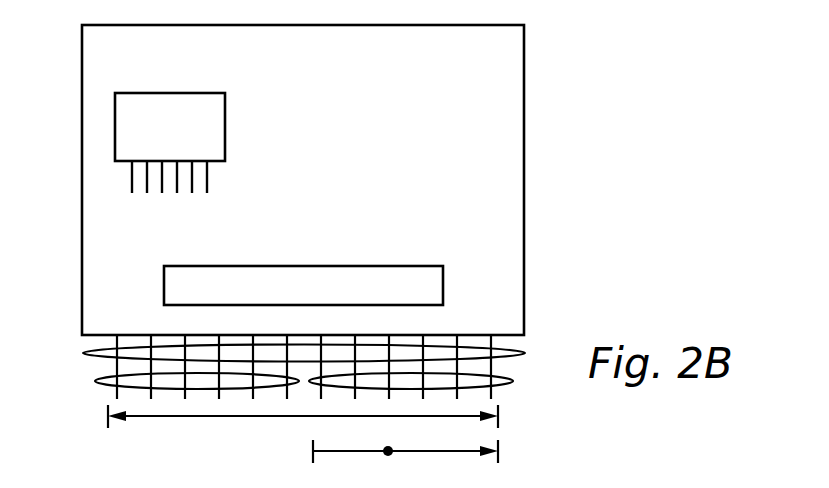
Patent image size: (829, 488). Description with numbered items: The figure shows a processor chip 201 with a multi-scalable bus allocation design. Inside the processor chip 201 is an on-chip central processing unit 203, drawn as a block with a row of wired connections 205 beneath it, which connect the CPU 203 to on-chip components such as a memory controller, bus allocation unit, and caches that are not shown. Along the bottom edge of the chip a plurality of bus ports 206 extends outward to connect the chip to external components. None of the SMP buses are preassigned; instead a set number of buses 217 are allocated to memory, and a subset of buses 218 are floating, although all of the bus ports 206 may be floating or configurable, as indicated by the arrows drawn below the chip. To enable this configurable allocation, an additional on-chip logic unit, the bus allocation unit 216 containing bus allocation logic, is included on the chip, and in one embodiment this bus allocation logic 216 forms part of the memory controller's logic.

The processor chip 201 is at (485, 25).
The central processing unit (CPU) 203 is at (195, 93).
The wired connections 205 is at (131, 180).
The bus ports (I/Os) 206 is at (84, 353).
The bus allocation unit 216 is at (392, 266).
The buses allocated to memory 217 is at (96, 381).
The floating buses 218 is at (511, 379).